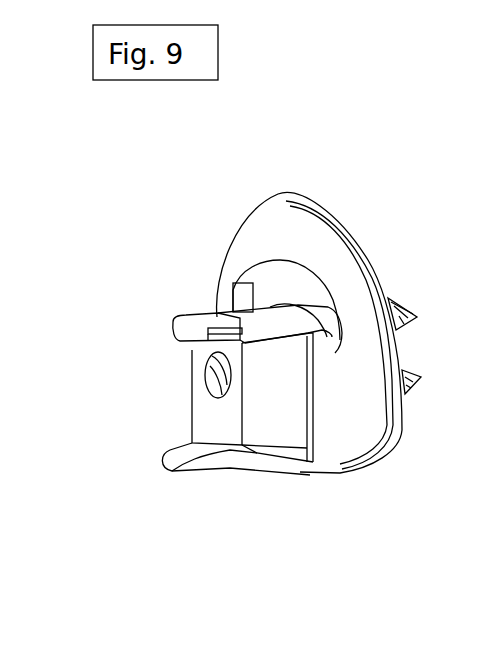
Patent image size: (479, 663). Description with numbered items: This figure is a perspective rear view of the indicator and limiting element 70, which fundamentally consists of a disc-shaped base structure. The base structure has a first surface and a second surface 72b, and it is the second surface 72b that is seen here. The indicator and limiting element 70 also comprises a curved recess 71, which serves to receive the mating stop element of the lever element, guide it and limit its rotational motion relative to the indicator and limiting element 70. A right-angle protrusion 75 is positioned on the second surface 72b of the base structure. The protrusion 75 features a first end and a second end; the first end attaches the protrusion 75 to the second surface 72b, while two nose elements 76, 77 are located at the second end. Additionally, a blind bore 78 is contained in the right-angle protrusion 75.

The indicator and limiting element 70 is at (335, 407).
The second surface 72b is at (288, 227).
The curved recess 71 is at (272, 283).
The right-angle protrusion 75 is at (270, 420).
The nose element 76 is at (182, 332).
The nose element 77 is at (178, 463).
The blind bore 78 is at (218, 378).